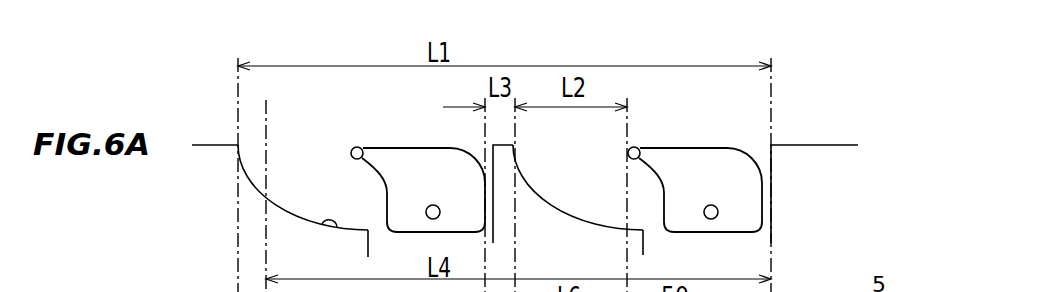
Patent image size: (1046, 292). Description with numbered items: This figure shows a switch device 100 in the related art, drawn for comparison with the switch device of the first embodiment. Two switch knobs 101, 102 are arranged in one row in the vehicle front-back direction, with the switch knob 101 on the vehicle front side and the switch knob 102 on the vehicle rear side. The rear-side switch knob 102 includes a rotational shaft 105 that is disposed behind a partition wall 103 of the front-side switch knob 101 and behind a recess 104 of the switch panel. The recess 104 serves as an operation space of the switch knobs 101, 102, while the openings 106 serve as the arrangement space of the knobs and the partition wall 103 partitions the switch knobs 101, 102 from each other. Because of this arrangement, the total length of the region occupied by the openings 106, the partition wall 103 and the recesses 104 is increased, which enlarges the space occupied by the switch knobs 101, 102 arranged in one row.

The switch device 100 is at (819, 101).
The switch knob 101 is at (364, 155).
The switch knob 102 is at (642, 156).
The partition wall 103 is at (502, 157).
The recess 104 is at (325, 224).
The rotational shaft 105 is at (430, 205).
The opening 106 is at (380, 230).